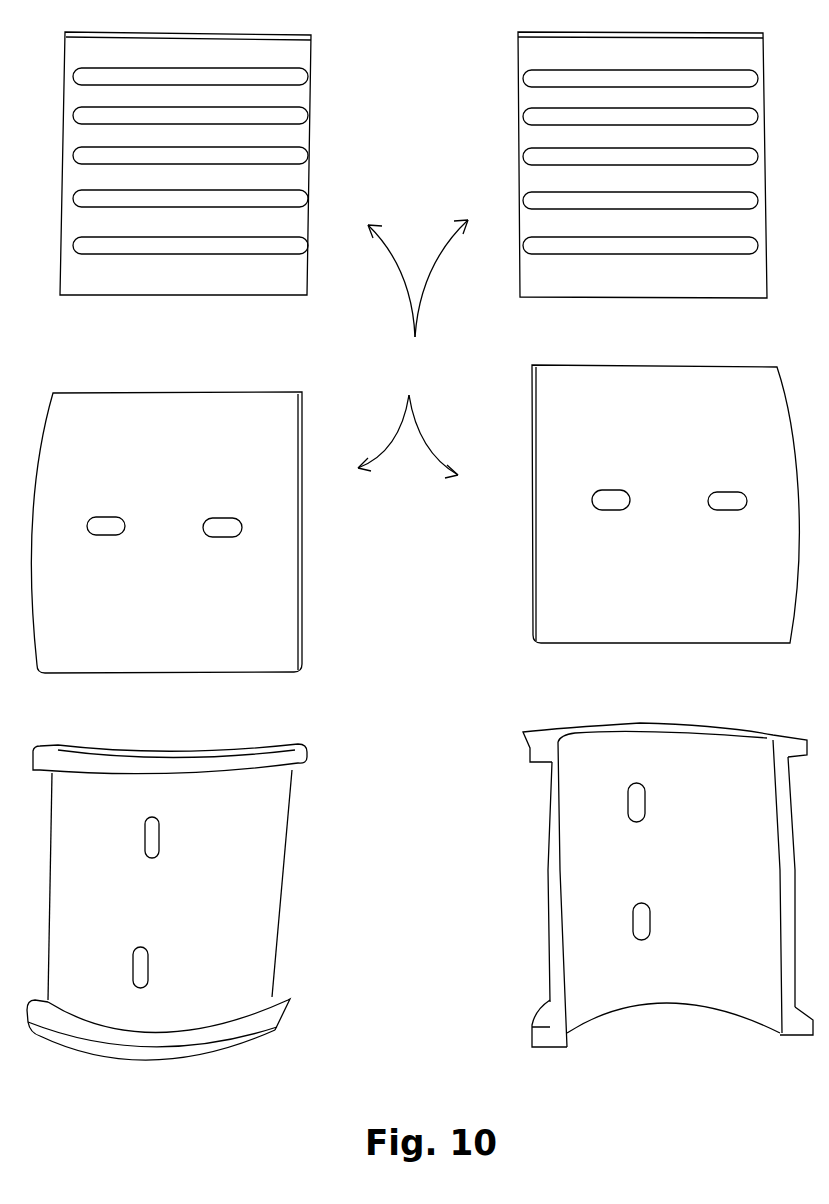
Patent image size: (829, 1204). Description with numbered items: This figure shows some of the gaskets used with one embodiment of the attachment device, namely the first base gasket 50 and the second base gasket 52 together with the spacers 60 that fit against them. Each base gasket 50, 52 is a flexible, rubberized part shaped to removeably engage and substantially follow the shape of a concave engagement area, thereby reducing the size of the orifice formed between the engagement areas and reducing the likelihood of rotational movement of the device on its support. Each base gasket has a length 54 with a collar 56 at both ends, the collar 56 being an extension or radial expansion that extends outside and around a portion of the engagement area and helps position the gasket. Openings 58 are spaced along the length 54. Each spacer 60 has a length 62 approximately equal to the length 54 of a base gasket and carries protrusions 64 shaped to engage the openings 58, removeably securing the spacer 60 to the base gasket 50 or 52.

The first base gasket 50 is at (322, 728).
The second base gasket 52 is at (565, 687).
The length 54 is at (352, 747).
The collar 56 is at (292, 742).
The opening 58 is at (152, 830).
The spacer 60 is at (413, 349).
The length 62 is at (300, 380).
The protrusion 64 is at (238, 528).